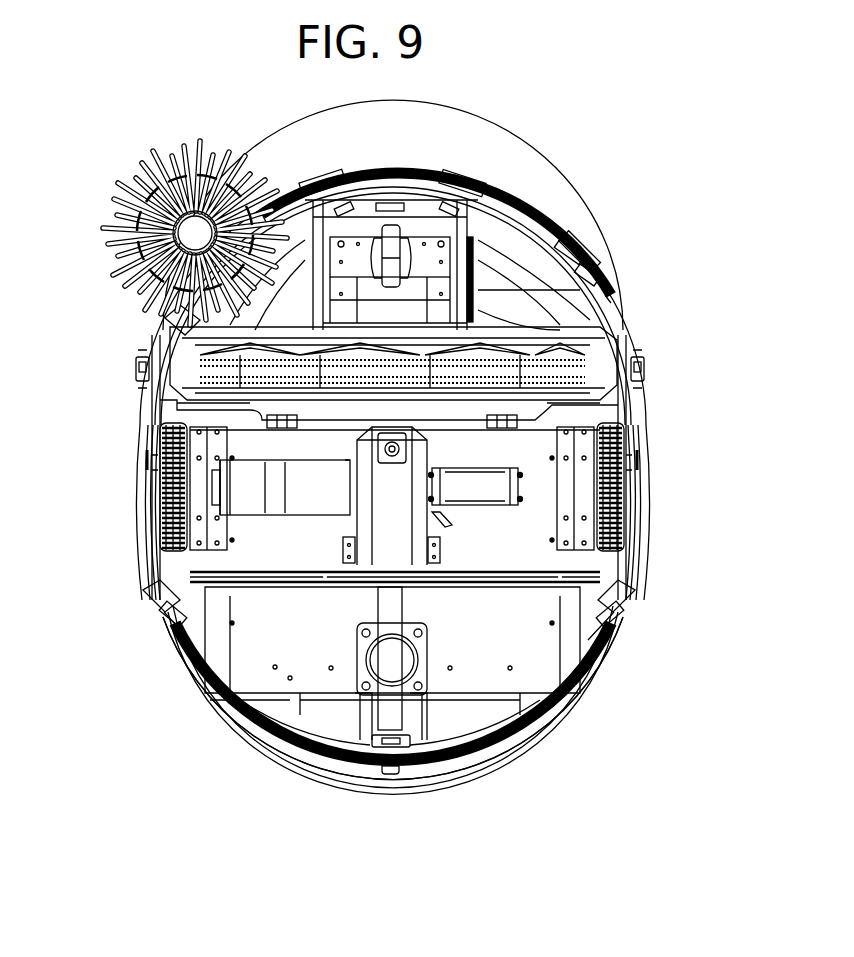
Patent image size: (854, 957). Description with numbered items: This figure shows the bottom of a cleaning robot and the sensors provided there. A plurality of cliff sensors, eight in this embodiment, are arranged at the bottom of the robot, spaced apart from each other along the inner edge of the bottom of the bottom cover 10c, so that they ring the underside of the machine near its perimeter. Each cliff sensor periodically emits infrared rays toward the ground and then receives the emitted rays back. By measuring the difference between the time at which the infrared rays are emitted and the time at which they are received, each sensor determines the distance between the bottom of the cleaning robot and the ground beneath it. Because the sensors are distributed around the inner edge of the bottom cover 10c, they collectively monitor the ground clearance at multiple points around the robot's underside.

The bottom cover 10c is at (549, 728).